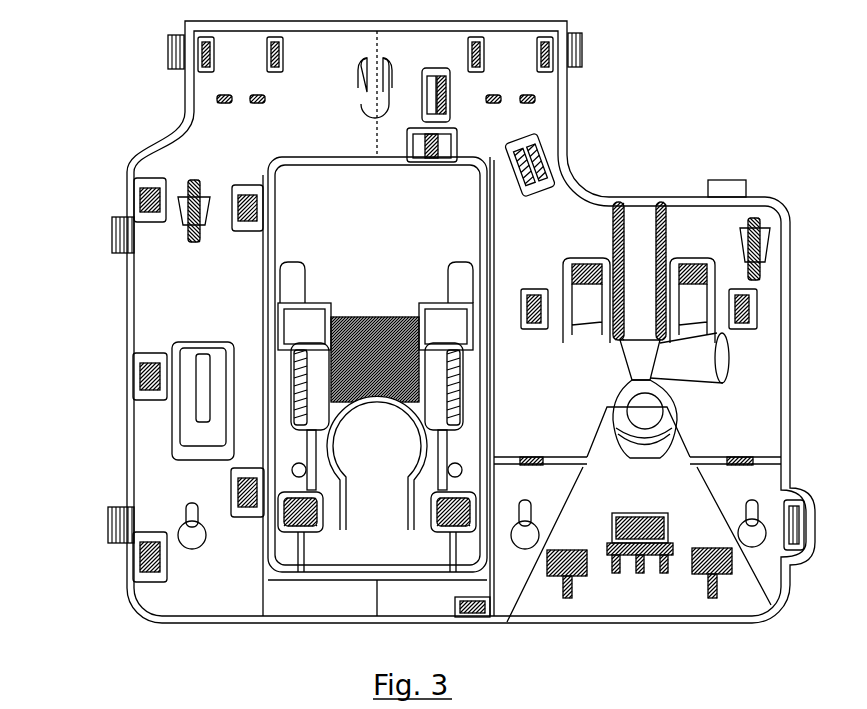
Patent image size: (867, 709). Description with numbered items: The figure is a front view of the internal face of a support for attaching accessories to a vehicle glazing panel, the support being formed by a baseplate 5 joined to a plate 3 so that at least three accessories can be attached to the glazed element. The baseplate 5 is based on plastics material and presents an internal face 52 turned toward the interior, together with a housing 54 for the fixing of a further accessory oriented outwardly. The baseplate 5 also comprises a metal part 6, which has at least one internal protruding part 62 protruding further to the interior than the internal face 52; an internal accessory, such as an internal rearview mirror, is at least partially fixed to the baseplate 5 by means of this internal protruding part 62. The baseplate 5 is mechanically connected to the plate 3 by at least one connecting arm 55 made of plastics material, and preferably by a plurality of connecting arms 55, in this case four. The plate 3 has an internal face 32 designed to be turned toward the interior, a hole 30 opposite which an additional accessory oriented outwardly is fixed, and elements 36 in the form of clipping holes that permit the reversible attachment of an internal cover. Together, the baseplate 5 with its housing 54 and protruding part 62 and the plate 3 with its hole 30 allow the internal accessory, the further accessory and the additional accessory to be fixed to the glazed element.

The plate 3 is at (87, 80).
The baseplate 5 is at (349, 258).
The metal part 6 is at (362, 349).
The hole 30 is at (637, 420).
The internal face 32 is at (692, 216).
The clipping holes 36 is at (763, 239).
The internal face 52 is at (425, 318).
The housing 54 is at (377, 463).
The connecting arm 55 is at (280, 268).
The internal protruding part 62 is at (377, 317).